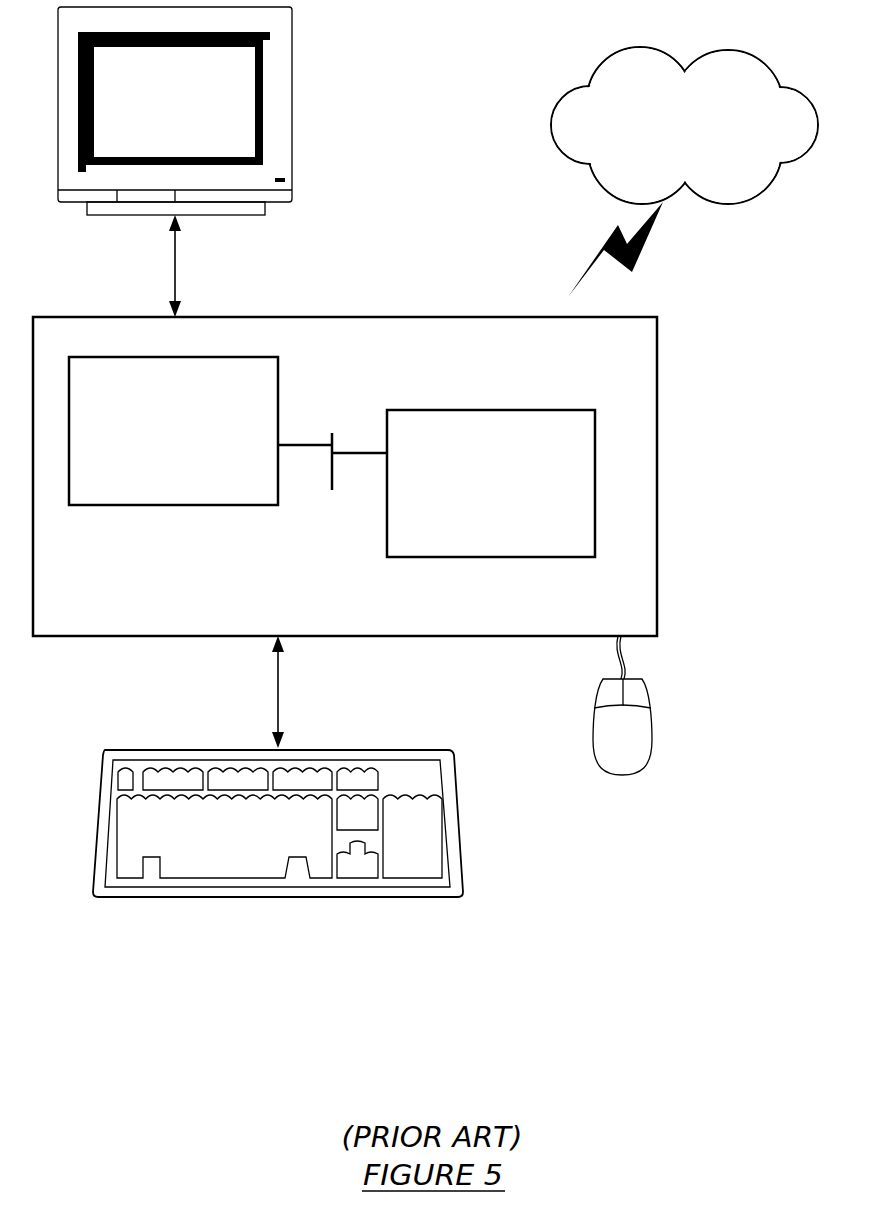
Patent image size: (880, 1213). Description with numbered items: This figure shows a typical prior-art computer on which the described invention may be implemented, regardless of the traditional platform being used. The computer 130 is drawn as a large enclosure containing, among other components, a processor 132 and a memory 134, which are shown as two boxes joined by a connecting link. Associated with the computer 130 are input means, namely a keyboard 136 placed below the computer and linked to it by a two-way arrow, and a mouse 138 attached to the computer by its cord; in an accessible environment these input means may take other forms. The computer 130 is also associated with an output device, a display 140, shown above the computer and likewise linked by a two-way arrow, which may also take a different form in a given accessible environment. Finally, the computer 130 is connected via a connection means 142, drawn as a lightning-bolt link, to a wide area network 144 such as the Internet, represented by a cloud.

The computer 130 is at (393, 476).
The processor 132 is at (152, 442).
The memory 134 is at (474, 493).
The keyboard 136 is at (249, 848).
The mouse 138 is at (648, 748).
The display 140 is at (196, 118).
The connection means 142 is at (593, 230).
The wide area network 144 is at (650, 48).